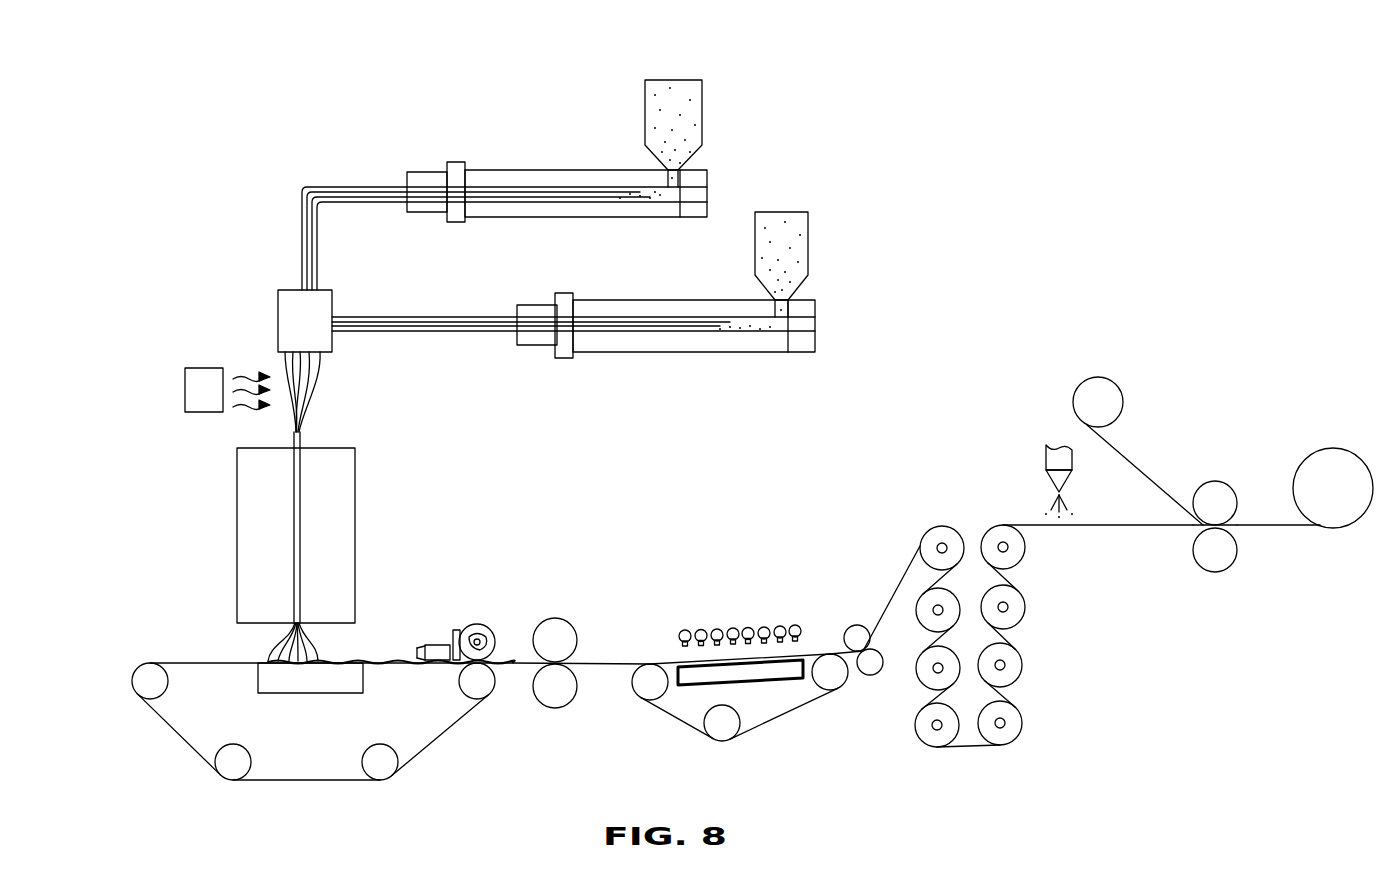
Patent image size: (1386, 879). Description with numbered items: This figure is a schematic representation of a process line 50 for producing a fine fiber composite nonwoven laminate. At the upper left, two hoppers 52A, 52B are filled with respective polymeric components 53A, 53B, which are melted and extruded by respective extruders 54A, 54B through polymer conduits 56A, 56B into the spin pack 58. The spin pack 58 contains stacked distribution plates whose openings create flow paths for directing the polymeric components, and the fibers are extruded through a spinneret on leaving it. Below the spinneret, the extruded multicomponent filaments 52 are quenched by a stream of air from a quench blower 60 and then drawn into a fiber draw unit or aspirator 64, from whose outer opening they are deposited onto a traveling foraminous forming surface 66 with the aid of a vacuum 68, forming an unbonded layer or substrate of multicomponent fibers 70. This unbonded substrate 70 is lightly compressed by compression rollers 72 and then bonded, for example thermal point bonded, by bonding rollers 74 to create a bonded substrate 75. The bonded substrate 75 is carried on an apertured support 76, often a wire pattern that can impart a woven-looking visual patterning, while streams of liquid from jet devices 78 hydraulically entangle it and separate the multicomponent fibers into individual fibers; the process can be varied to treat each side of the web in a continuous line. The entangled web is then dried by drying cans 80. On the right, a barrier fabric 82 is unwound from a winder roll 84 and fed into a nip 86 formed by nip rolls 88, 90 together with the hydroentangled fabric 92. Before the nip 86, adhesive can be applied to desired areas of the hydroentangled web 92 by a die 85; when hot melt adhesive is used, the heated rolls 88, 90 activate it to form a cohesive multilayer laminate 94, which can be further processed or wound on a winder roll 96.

The apparatus for making nonwoven web 50 is at (130, 211).
The filaments 52 is at (315, 383).
The hopper 52A is at (778, 212).
The hopper 52B is at (673, 80).
The polymeric component 53A is at (797, 248).
The polymeric component 53B is at (695, 113).
The extruder 54A is at (601, 291).
The extruder 54B is at (500, 158).
The polymer conduit 56A is at (377, 317).
The polymer conduit 56B is at (348, 187).
The spin pack 58 is at (278, 313).
The quench blower 60 is at (205, 375).
The fiber draw unit or aspirator 64 is at (348, 434).
The traveling foraminous forming surface 66 is at (448, 730).
The vacuum 68 is at (302, 693).
The unbonded layer or substrate of multicomponent fibers 70 is at (378, 662).
The compression rollers 72 is at (487, 627).
The bonding rollers 74 is at (555, 618).
The bonded substrate 75 is at (602, 660).
The apertured support 76 is at (682, 723).
The jet devices 78 is at (792, 625).
The drying cans 80 is at (943, 532).
The barrier fabric 82 is at (1138, 467).
The winder roll 84 is at (1122, 393).
The die 85 is at (1045, 458).
The nip 86 is at (1192, 538).
The nip roll 88 is at (1215, 482).
The nip roll 90 is at (1223, 567).
The hydroentangled fabric 92 is at (1112, 528).
The multilayer laminate 94 is at (1285, 528).
The winder roll 96 is at (1337, 450).